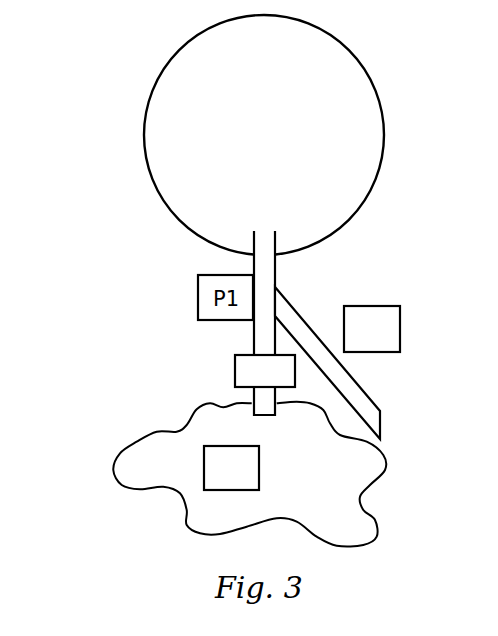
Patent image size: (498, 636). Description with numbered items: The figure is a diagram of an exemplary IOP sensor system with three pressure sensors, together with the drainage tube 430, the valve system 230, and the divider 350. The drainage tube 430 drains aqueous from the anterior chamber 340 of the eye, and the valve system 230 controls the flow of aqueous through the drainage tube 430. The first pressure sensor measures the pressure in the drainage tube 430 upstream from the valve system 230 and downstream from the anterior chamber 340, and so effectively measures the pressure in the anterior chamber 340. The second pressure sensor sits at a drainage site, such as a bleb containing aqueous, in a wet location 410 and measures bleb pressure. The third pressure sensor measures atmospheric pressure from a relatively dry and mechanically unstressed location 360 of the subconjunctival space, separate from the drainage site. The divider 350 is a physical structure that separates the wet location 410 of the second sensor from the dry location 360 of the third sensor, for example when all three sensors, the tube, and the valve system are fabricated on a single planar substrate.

The anterior chamber 340 is at (282, 152).
The drainage tube 430 is at (277, 263).
The divider 350 is at (348, 368).
The valve system 230 is at (235, 373).
The dry location 360 is at (383, 306).
The wet location 410 is at (112, 470).